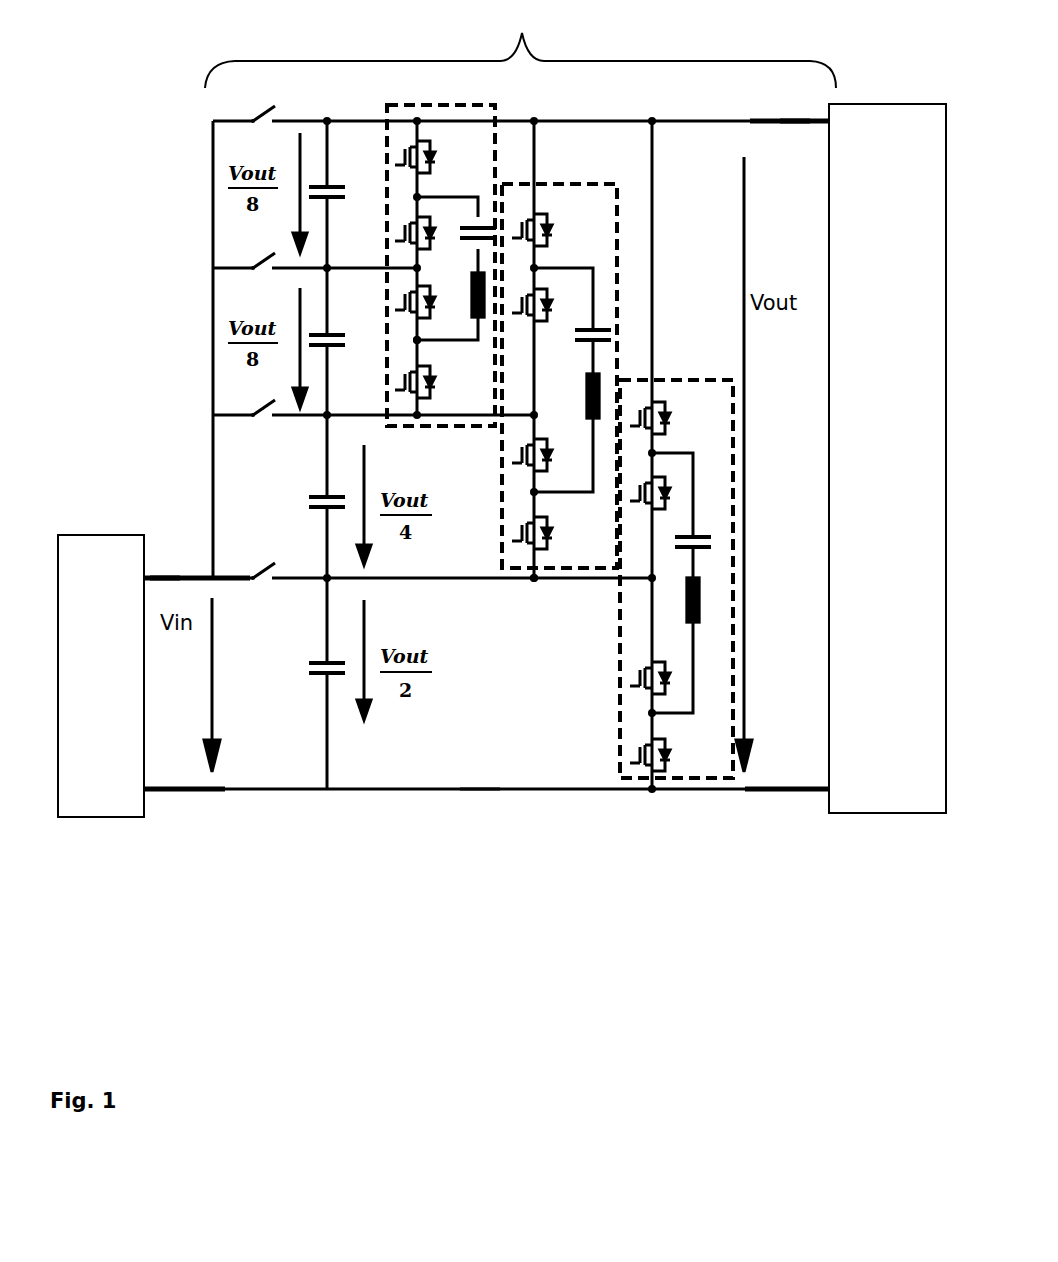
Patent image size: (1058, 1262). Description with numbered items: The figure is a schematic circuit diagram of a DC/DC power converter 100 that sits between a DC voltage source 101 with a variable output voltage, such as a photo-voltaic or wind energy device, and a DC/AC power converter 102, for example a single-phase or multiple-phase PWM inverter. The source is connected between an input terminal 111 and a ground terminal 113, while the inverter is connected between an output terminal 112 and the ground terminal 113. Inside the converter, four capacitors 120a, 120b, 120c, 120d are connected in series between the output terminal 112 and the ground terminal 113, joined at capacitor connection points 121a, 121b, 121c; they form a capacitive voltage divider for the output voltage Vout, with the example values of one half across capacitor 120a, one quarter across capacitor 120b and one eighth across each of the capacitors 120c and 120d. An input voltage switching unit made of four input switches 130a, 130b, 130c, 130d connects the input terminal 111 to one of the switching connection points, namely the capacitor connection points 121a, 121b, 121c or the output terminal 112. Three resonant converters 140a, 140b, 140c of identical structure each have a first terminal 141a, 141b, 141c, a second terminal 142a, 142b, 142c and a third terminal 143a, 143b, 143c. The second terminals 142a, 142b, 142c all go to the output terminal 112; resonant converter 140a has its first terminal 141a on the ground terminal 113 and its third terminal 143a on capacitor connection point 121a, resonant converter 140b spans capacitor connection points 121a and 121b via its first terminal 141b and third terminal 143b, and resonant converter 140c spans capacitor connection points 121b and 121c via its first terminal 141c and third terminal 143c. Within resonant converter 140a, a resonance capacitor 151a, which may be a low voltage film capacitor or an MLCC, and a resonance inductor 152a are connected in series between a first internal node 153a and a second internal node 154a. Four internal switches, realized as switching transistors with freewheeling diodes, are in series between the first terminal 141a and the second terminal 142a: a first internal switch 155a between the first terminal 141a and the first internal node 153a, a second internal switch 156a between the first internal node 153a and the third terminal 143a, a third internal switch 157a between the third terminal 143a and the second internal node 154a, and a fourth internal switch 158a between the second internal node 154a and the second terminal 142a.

The DC/DC power converter 100 is at (520, 47).
The DC voltage source 101 is at (101, 676).
The DC/AC power converter 102 is at (887, 458).
The input terminal 111 is at (165, 578).
The output terminal 112 is at (795, 121).
The ground terminal 113 is at (478, 789).
The capacitor 120a is at (297, 669).
The capacitor 120b is at (297, 503).
The capacitor 120c is at (344, 319).
The capacitor 120d is at (345, 171).
The capacitor connection point 121a is at (327, 578).
The capacitor connection point 121b is at (327, 415).
The capacitor connection point 121c is at (340, 268).
The input switch 130a is at (256, 588).
The input switch 130b is at (256, 425).
The input switch 130c is at (256, 278).
The input switch 130d is at (256, 130).
The resonant converter 140a is at (687, 455).
The resonant converter 140b is at (559, 349).
The resonant converter 140c is at (441, 251).
The first terminal 141a is at (652, 789).
The first terminal 141b is at (534, 578).
The first terminal 141c is at (417, 415).
The second terminal 142a is at (652, 108).
The second terminal 142b is at (534, 108).
The second terminal 142c is at (417, 121).
The third terminal 143a is at (652, 578).
The third terminal 143b is at (534, 415).
The third terminal 143c is at (445, 297).
The resonance capacitor 151a is at (700, 548).
The resonance inductor 152a is at (700, 605).
The first internal node 153a is at (652, 713).
The second internal node 154a is at (652, 453).
The first internal switch 155a is at (677, 755).
The second internal switch 156a is at (668, 686).
The third internal switch 157a is at (668, 500).
The fourth internal switch 158a is at (677, 418).